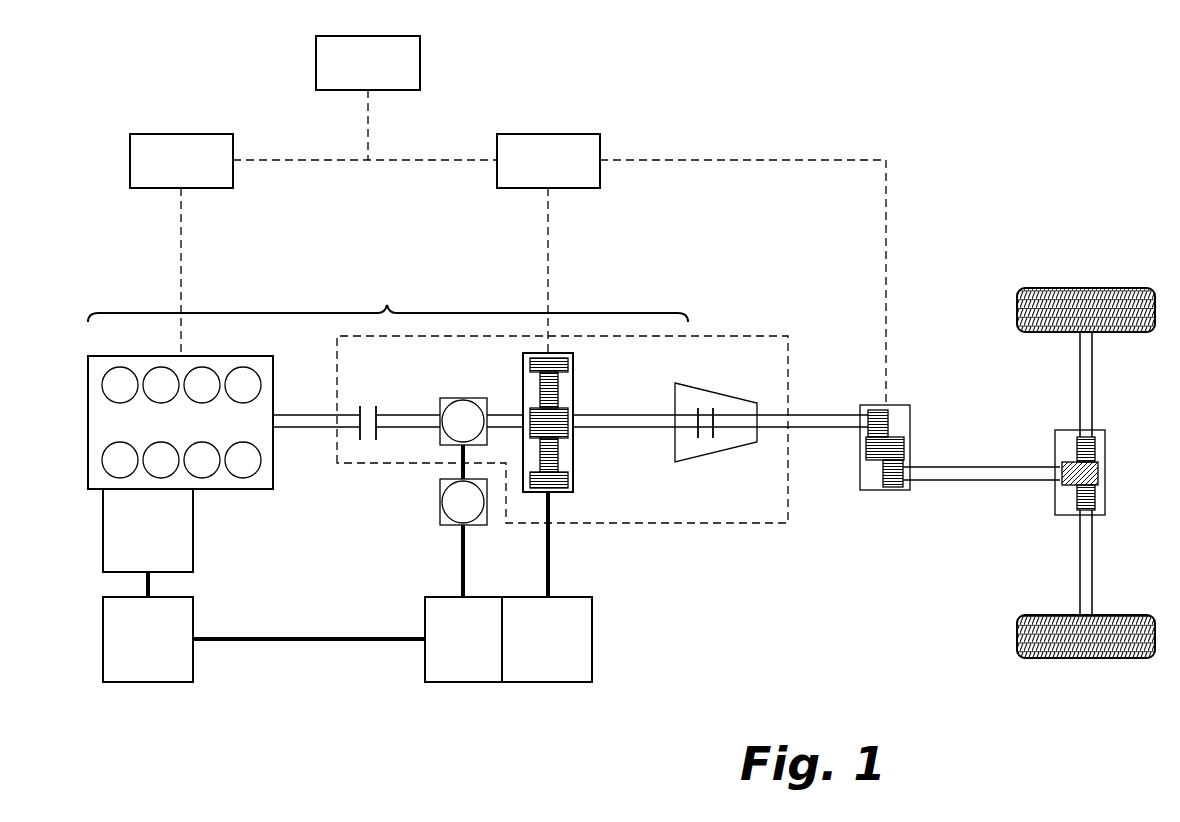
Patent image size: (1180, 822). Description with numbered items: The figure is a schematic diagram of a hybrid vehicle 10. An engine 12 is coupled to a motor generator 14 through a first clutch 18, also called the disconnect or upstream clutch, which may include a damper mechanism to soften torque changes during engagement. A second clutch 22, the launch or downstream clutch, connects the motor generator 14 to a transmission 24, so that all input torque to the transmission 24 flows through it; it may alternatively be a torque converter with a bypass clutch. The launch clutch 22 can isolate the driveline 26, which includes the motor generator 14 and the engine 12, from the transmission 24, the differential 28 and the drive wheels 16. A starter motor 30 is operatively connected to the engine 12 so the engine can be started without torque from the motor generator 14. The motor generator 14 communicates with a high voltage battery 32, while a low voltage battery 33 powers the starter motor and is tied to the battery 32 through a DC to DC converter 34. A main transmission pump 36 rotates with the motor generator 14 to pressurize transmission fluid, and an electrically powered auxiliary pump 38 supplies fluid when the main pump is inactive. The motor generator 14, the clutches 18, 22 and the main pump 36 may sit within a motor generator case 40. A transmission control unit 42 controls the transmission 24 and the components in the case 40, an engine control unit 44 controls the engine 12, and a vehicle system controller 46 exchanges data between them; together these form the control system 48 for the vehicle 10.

The hybrid vehicle 10 is at (922, 130).
The engine 12 is at (209, 441).
The motor generator (M/G) 14 is at (573, 388).
The vehicle wheels 16 is at (1083, 288).
The first clutch (disconnect clutch) 18 is at (362, 405).
The second clutch (launch clutch) 22 is at (705, 405).
The transmission 24 is at (896, 405).
The driveline 26 is at (388, 302).
The differential 28 is at (1090, 430).
The starter motor 30 is at (103, 531).
The battery 32 is at (572, 597).
The low voltage battery 33 is at (103, 640).
The DC to DC converter 34 is at (445, 597).
The main transmission pump 36 is at (463, 397).
The auxiliary pump 38 is at (440, 518).
The motor generator case 40 is at (690, 523).
The transmission control unit (TCU) 42 is at (497, 148).
The engine control unit (ECU) 44 is at (130, 160).
The vehicle system controller (VSC) 46 is at (316, 62).
The control system 48 is at (554, 58).